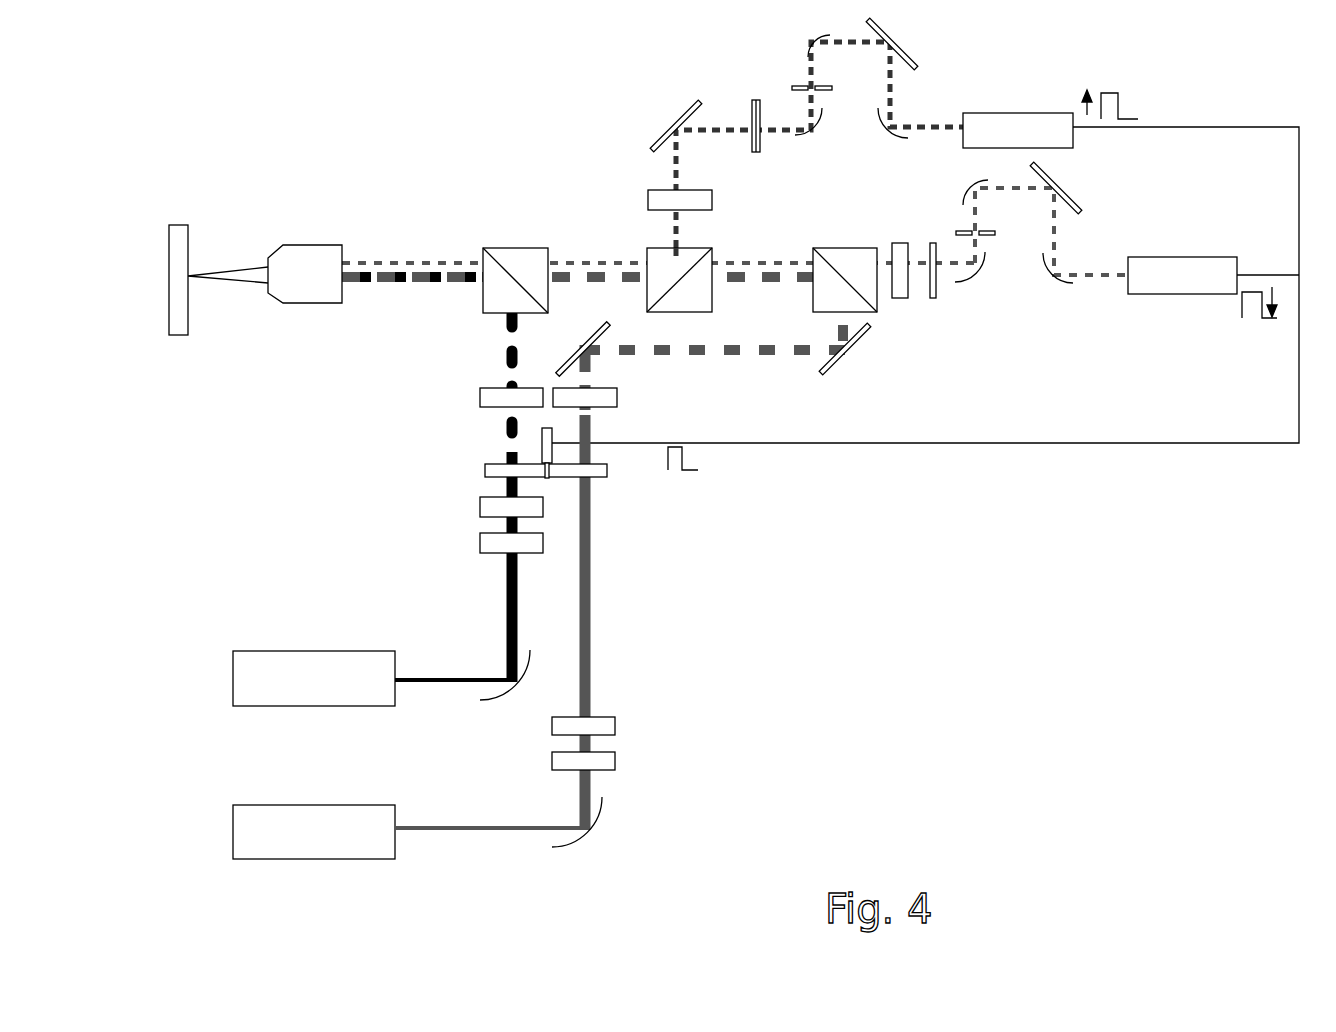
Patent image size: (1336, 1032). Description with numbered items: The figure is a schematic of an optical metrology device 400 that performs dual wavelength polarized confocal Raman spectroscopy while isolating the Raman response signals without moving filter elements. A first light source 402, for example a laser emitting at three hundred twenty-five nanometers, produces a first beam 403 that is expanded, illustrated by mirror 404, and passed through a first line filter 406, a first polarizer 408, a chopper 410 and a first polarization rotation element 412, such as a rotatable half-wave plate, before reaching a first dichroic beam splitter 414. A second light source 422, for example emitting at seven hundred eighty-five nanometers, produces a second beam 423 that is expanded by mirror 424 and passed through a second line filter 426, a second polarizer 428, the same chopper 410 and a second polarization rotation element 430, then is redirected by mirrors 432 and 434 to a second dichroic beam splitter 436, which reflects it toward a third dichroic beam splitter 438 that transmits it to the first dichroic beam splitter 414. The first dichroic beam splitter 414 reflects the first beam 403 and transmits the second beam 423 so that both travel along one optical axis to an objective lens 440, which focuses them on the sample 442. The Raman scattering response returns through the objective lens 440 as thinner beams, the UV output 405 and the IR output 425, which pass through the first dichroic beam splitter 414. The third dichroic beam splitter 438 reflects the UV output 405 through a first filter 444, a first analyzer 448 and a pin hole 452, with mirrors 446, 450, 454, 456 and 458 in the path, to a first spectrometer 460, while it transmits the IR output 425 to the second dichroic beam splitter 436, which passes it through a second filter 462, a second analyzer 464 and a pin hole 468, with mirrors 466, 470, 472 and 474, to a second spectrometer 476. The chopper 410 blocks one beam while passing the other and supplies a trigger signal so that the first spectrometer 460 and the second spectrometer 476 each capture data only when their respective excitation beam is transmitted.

The optical metrology device 400 is at (303, 69).
The first light source 402 is at (312, 651).
The first beam 403 is at (507, 620).
The mirror 404 is at (480, 700).
The UV output 405 is at (677, 228).
The first line filter 406 is at (480, 543).
The first polarizer 408 is at (480, 507).
The chopper 410 is at (485, 470).
The first polarization rotation element 412 is at (480, 400).
The first dichroic beam splitter 414 is at (487, 248).
The second light source 422 is at (285, 805).
The second beam 423 is at (580, 812).
The mirror 424 is at (553, 847).
The IR output 425 is at (793, 262).
The second line filter 426 is at (615, 761).
The second polarizer 428 is at (615, 726).
The second polarization rotation element 430 is at (617, 405).
The mirror 432 is at (607, 325).
The mirror 434 is at (823, 373).
The second dichroic beam splitter 436 is at (815, 250).
The third dichroic beam splitter 438 is at (649, 250).
The objective lens 440 is at (303, 245).
The sample 442 is at (180, 336).
The first filter 444 is at (648, 190).
The mirror 446 is at (670, 118).
The first analyzer 448 is at (750, 125).
The mirror 450 is at (793, 137).
The pin hole 452 is at (792, 88).
The mirror 454 is at (805, 55).
The mirror 456 is at (912, 60).
The mirror 458 is at (878, 130).
The first spectrometer 460 is at (1033, 113).
The second filter 462 is at (900, 298).
The second analyzer 464 is at (933, 298).
The mirror 466 is at (985, 260).
The pin hole 468 is at (956, 233).
The mirror 470 is at (975, 180).
The mirror 472 is at (1080, 210).
The mirror 474 is at (1073, 287).
The second spectrometer 476 is at (1137, 257).